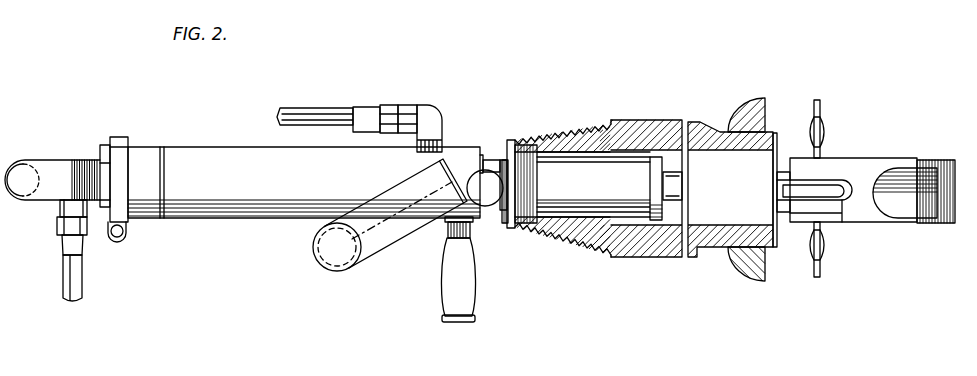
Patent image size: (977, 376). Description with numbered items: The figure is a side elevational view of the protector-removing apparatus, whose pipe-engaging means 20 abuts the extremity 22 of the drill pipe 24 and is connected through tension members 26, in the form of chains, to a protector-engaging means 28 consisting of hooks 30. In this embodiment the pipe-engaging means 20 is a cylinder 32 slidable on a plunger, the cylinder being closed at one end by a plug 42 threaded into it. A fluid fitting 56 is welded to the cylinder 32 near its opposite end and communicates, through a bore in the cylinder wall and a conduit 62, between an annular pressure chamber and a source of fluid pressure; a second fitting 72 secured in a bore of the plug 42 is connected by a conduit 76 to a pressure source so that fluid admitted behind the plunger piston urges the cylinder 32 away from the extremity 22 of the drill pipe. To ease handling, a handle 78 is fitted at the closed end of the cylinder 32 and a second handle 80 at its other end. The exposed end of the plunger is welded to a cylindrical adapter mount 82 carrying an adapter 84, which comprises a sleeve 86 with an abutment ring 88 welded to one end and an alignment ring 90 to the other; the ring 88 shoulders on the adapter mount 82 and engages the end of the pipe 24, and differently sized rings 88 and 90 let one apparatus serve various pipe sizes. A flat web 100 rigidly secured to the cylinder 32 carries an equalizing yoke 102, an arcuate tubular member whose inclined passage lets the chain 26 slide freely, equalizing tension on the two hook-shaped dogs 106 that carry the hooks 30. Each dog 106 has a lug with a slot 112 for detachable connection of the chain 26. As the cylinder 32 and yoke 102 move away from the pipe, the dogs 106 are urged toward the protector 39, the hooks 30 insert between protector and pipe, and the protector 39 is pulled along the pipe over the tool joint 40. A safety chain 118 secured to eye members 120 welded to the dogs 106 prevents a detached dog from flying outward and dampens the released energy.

The pipe-engaging means 20 is at (195, 145).
The extremity of the drill pipe 22 is at (520, 140).
The drill pipe 24 is at (713, 130).
The tension members 26 is at (490, 207).
The protector-engaging means 28 is at (895, 158).
The hooks 30 is at (900, 200).
The cylinder 32 is at (232, 203).
The protector 39 is at (752, 100).
The tool joint 40 is at (643, 125).
The plug 42 is at (97, 150).
The fluid fitting 56 is at (428, 120).
The conduit 62 is at (315, 110).
The fitting 72 is at (58, 205).
The conduit 76 is at (70, 277).
The handle 78 is at (28, 167).
The second handle 80 is at (465, 285).
The cylindrical adapter mount 82 is at (665, 188).
The adapter 84 is at (575, 208).
The sleeve 86 is at (607, 200).
The abutment ring 88 is at (510, 152).
The alignment ring 90 is at (655, 167).
The flat web 100 is at (407, 215).
The equalizing yoke 102 is at (372, 245).
The hook-shaped dog 106 is at (870, 163).
The slot 112 is at (847, 220).
The safety chain 118 is at (820, 105).
The eye members 120 is at (818, 158).